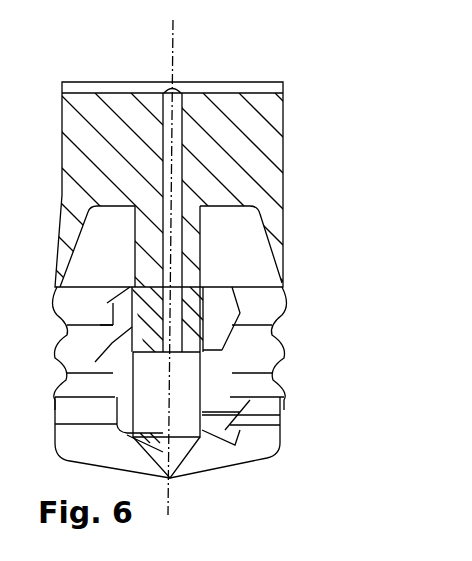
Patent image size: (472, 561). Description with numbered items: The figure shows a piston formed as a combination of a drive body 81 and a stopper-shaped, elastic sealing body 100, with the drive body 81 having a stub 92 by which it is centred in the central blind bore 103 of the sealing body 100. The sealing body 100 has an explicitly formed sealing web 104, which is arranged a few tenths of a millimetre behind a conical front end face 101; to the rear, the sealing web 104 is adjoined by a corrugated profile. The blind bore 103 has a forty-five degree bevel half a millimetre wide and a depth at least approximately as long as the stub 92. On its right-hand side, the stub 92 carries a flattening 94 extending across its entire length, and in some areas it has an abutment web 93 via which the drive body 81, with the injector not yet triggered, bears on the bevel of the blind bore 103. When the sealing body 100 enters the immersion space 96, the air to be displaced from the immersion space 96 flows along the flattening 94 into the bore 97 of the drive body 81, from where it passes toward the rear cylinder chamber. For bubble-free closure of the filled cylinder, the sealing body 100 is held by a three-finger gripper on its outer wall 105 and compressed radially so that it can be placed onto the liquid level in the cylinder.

The drive body 81 is at (285, 112).
The bore 97 is at (182, 163).
The immersion space 96 is at (240, 222).
The stub 92 is at (190, 248).
The flattening 94 is at (200, 265).
The abutment web 93 is at (236, 296).
The outer wall 105 is at (284, 343).
The sealing web 104 is at (228, 418).
The blind bore 103 is at (240, 422).
The sealing body 100 is at (282, 462).
The conical front end face 101 is at (232, 463).